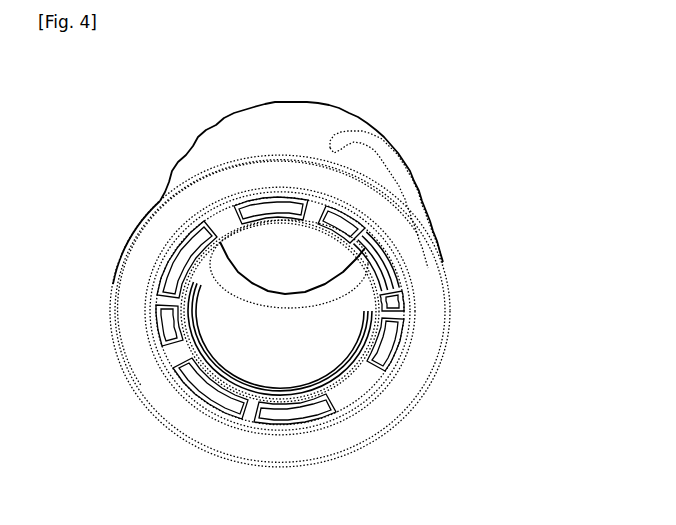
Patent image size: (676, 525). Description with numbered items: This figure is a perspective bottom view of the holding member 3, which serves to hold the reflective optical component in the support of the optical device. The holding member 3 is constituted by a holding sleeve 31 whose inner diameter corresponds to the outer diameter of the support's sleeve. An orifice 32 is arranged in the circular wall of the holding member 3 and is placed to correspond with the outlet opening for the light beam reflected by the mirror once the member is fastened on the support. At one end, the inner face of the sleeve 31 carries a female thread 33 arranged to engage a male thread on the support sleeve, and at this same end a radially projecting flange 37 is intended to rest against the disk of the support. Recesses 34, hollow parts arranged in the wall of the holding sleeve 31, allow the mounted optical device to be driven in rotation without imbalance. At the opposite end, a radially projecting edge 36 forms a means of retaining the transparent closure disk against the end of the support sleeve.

The holding member 3 is at (467, 191).
The holding sleeve 31 is at (205, 152).
The orifice 32 is at (385, 138).
The female thread 33 is at (353, 370).
The recesses 34 is at (392, 284).
The radially projecting edge 36 is at (218, 268).
The radially projecting flange 37 is at (415, 320).